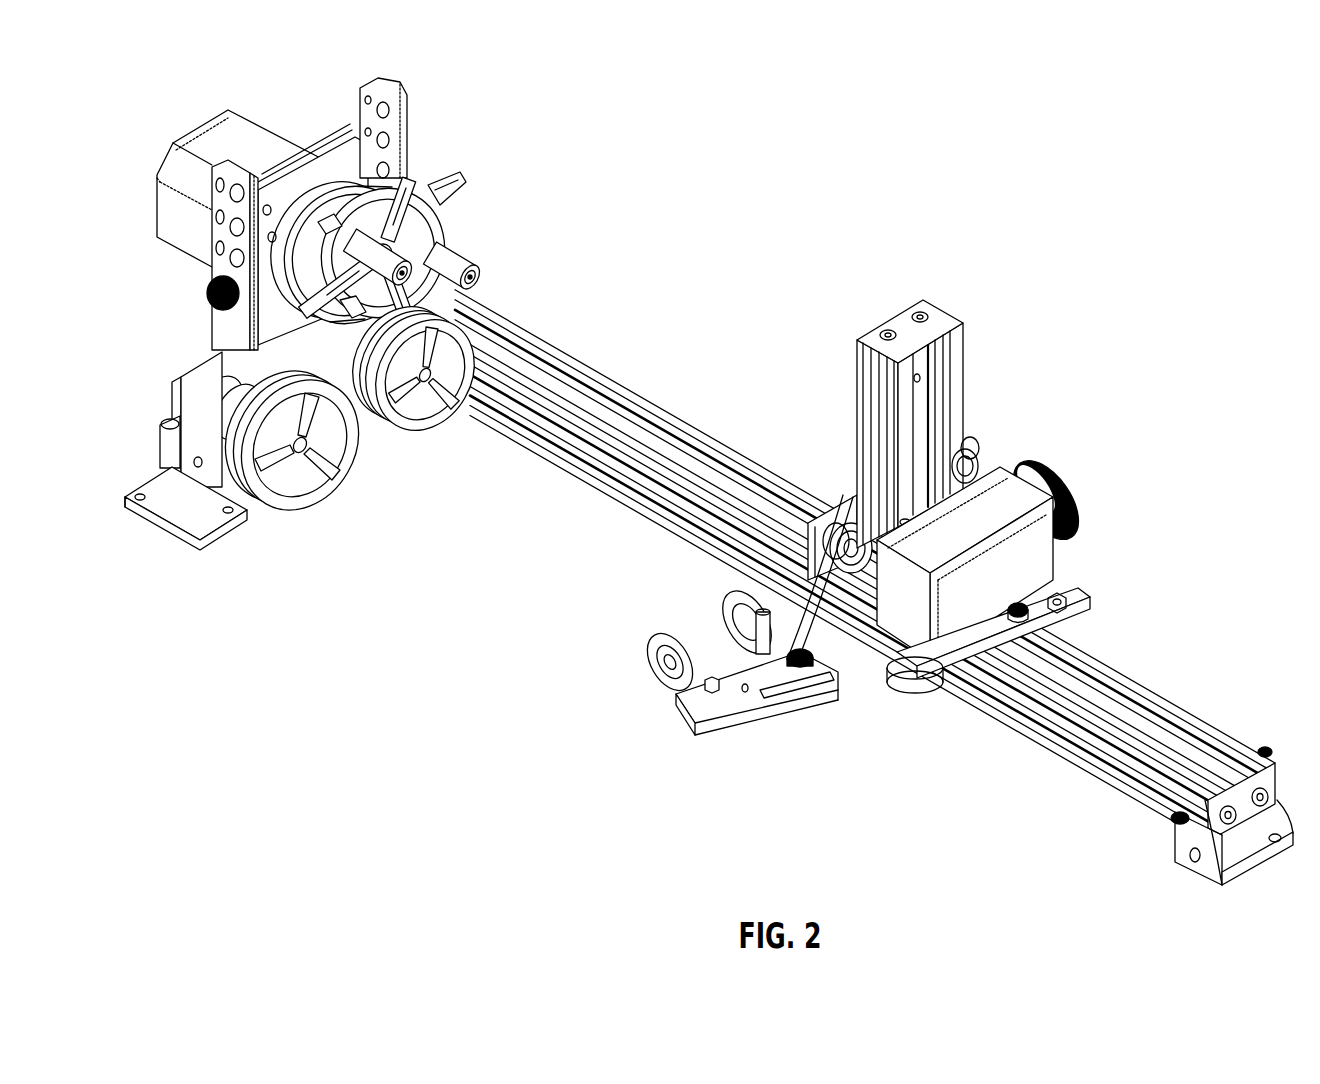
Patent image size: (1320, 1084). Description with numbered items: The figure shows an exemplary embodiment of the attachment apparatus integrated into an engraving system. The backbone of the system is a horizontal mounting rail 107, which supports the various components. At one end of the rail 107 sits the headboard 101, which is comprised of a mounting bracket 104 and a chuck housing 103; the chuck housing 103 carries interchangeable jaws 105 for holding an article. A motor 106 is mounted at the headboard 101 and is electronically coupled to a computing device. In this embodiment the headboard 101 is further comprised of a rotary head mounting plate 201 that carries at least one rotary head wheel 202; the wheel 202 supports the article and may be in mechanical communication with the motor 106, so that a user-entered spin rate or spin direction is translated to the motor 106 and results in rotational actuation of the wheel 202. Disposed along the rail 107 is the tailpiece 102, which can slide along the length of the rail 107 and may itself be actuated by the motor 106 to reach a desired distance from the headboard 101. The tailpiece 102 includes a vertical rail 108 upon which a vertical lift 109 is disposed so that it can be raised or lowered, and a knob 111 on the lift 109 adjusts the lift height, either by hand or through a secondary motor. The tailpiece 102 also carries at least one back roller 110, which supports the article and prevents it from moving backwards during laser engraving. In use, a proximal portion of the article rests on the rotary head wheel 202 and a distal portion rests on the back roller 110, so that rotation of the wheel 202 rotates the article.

The headboard 101 is at (329, 312).
The tailpiece 102 is at (979, 496).
The chuck housing 103 is at (456, 208).
The mounting bracket 104 is at (360, 112).
The interchangeable jaws 105 is at (478, 262).
The motor 106 is at (200, 122).
The horizontal mounting rail 107 is at (668, 412).
The vertical rail 108 is at (960, 402).
The vertical lift 109 is at (977, 594).
The back roller 110 is at (660, 643).
The knob 111 is at (1073, 485).
The rotary head mounting plate 201 is at (190, 356).
The rotary head wheel 202 is at (307, 503).